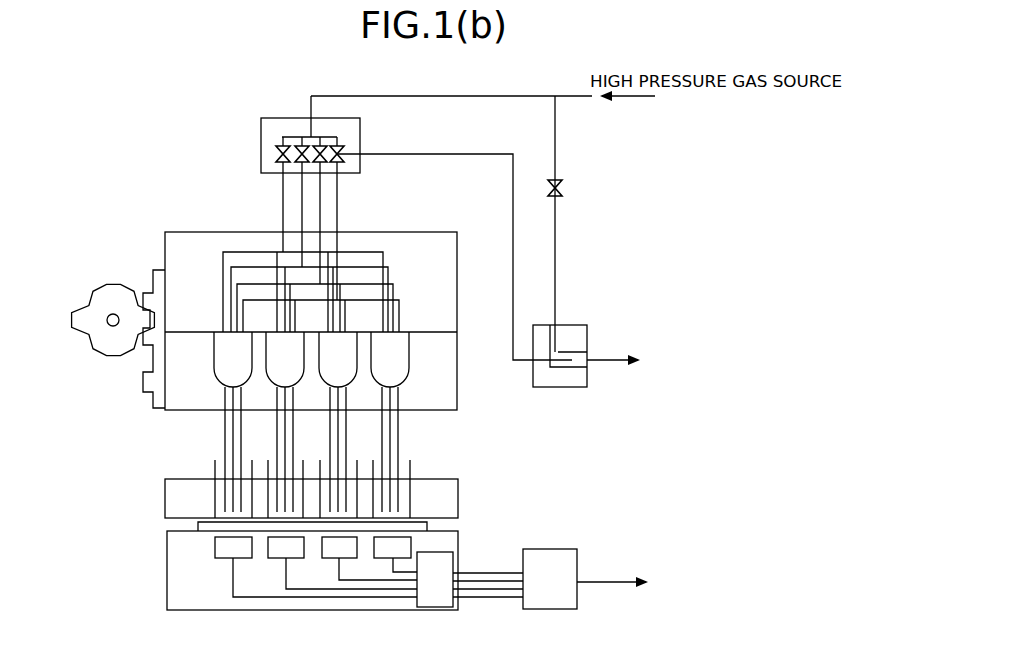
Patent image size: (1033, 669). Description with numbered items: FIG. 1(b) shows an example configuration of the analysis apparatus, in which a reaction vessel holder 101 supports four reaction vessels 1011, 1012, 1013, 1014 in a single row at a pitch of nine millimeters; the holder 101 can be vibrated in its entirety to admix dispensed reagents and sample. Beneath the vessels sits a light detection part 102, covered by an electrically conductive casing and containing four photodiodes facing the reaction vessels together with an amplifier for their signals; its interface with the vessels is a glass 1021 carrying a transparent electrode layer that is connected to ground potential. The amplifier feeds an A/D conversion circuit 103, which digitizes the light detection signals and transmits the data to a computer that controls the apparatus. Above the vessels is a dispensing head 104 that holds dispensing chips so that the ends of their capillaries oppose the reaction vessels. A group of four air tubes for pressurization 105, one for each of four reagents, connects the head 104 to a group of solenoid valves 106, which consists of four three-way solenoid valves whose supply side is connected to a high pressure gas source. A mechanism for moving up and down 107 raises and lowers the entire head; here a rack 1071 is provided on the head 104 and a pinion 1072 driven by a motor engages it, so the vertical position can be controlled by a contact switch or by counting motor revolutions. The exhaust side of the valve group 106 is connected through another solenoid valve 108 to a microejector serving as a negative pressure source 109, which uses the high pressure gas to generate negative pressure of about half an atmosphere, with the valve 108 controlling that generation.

The reaction vessel holder 101 is at (292, 452).
The reaction vessel 1011 is at (211, 452).
The reaction vessel 1012 is at (273, 452).
The reaction vessel 1013 is at (350, 452).
The reaction vessel 1014 is at (418, 452).
The light detection part 102 is at (326, 570).
The glass 1021 is at (198, 524).
The A/D conversion circuit 103 is at (585, 567).
The dispensing head 104 is at (326, 321).
The air tubes for pressurization 105 is at (293, 231).
The group of solenoid valves 106 is at (401, 239).
The mechanism for moving up and down 107 is at (106, 327).
The rack 1071 is at (140, 339).
The pinion 1072 is at (100, 319).
The solenoid valve 108 is at (574, 190).
The negative pressure source 109 is at (600, 342).